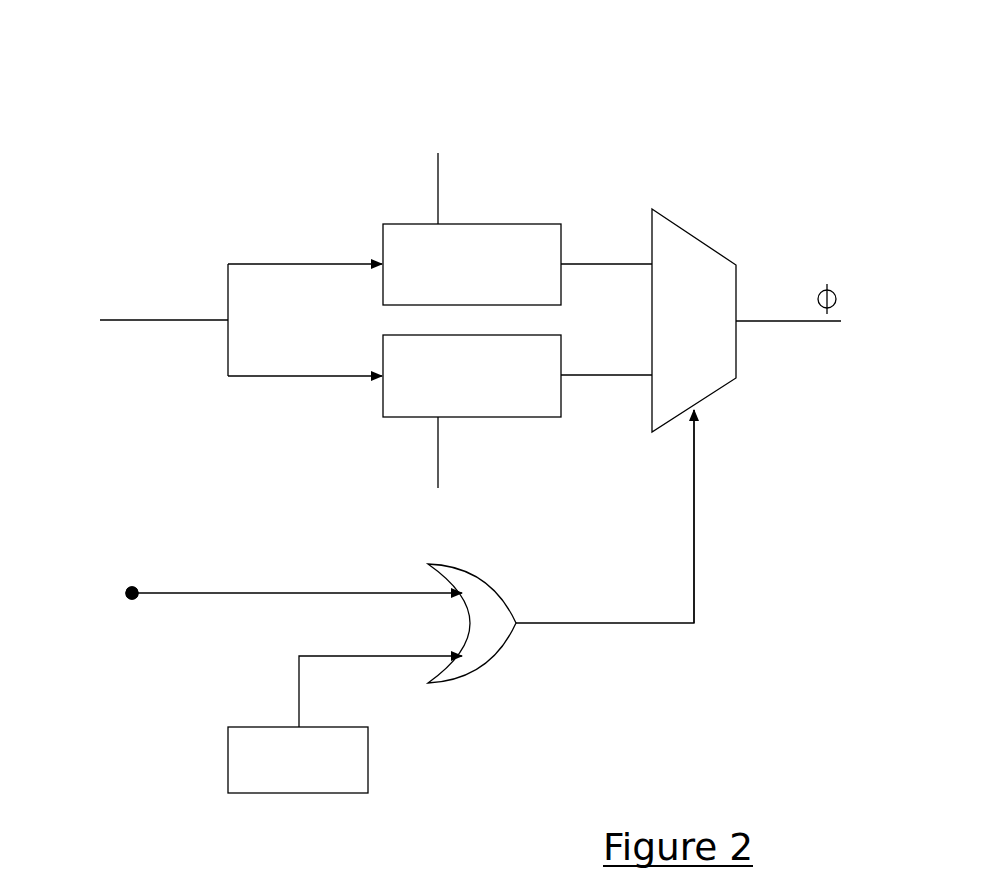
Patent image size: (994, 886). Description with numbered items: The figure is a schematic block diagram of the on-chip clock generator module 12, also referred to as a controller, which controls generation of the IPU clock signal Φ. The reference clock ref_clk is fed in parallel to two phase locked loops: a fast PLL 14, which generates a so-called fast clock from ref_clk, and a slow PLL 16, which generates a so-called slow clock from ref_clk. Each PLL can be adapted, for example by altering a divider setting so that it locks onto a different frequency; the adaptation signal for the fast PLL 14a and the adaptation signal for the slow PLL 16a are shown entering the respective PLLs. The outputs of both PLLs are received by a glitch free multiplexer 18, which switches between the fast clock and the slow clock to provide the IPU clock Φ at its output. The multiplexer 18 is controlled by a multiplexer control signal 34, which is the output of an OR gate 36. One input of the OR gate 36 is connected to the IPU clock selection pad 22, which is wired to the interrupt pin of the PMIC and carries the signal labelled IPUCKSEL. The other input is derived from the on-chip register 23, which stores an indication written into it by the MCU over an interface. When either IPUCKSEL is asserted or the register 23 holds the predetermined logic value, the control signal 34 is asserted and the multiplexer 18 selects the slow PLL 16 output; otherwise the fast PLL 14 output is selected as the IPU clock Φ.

The clock generator module 12 is at (660, 56).
The fast PLL 14 is at (510, 224).
The adaptation signal for the fast PLL 14a is at (440, 178).
The slow PLL 16 is at (497, 417).
The adaptation signal for the slow PLL 16a is at (439, 455).
The multiplexer 18 is at (694, 237).
The IPU clock selection pad 22 is at (128, 589).
The register 23 is at (370, 765).
The multiplexer control signal 34 is at (694, 514).
The OR gate 36 is at (497, 662).